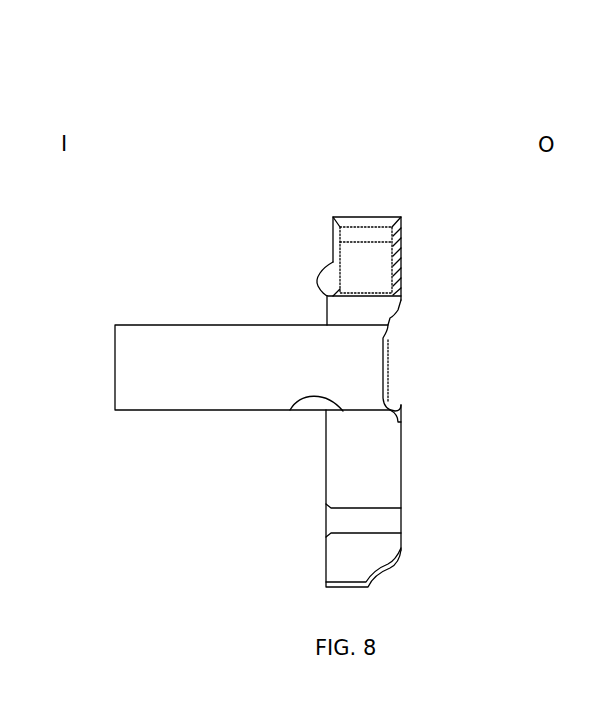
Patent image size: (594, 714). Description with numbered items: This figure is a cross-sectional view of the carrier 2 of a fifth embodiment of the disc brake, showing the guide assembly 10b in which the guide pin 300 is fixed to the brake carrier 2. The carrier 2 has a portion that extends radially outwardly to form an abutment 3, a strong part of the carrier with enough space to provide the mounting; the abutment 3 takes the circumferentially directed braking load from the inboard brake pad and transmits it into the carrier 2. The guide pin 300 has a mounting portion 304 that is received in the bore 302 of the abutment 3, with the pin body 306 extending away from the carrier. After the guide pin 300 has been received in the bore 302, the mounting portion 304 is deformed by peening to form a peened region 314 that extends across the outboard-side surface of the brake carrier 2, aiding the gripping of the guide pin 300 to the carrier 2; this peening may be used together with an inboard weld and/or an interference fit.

The fastening assembly 10b is at (355, 168).
The mounting portion 304 is at (345, 360).
The guide pin 300 is at (182, 340).
The abutment 3 is at (396, 268).
The peened region 314 is at (403, 348).
The carrier 2 is at (387, 472).
The plate body 306 is at (205, 383).
The bore 302 is at (290, 410).